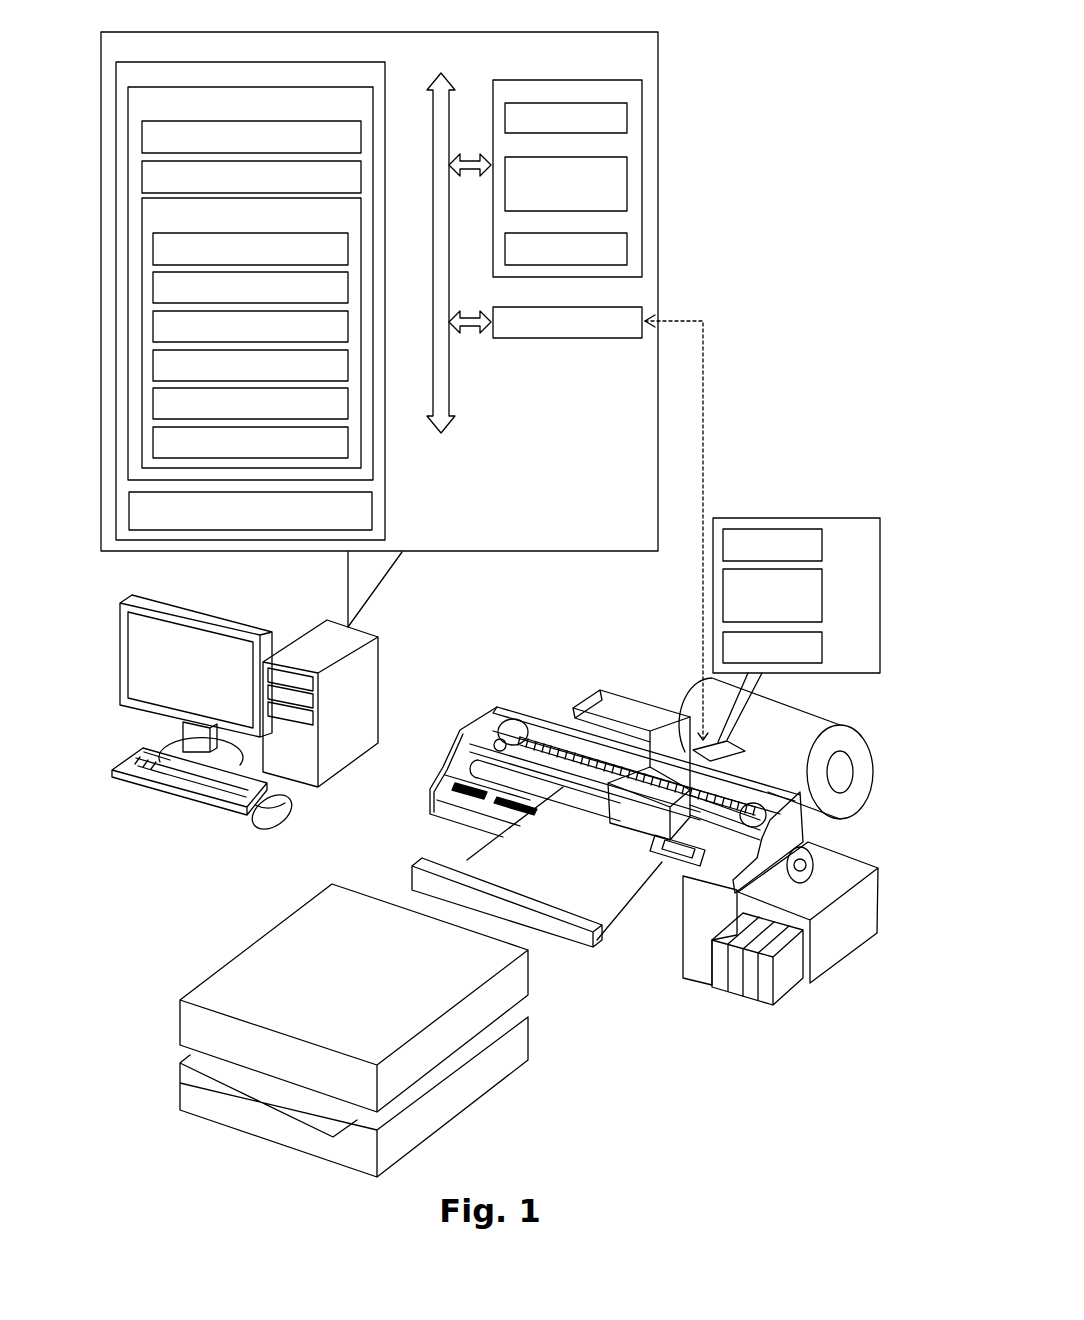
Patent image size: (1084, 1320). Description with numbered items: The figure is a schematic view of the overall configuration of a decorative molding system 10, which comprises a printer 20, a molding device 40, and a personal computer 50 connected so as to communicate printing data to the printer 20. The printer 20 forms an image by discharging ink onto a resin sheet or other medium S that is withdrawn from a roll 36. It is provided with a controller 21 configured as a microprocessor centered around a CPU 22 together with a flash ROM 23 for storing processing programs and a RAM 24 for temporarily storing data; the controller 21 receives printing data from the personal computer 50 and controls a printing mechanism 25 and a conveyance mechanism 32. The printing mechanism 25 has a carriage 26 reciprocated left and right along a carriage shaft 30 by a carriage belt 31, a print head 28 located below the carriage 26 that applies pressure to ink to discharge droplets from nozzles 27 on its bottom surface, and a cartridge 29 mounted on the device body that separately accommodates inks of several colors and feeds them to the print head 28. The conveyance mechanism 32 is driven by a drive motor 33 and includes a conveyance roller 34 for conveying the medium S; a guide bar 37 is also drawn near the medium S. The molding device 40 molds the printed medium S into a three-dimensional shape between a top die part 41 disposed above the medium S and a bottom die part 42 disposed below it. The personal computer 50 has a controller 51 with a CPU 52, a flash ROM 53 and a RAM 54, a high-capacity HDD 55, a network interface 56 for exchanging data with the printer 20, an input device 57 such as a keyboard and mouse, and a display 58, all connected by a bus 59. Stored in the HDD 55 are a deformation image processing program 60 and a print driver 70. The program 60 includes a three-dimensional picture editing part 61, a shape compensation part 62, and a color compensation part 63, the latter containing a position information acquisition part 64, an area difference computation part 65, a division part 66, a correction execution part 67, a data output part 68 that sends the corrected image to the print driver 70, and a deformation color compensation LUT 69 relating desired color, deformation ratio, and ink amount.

The decorative molding system 10 is at (614, 25).
The printer 20 is at (613, 670).
The controller 21 is at (822, 518).
The CPU 22 is at (822, 547).
The flash ROM 23 is at (822, 594).
The RAM 24 is at (822, 645).
The printing mechanism 25 is at (639, 844).
The carriage 26 is at (660, 830).
The nozzles 27 is at (687, 837).
The print head 28 is at (670, 835).
The cartridge 29 is at (752, 985).
The carriage shaft 30 is at (475, 748).
The carriage belt 31 is at (500, 730).
The conveyance mechanism 32 is at (428, 836).
The drive motor 33 is at (813, 845).
The conveyance roller 34 is at (490, 805).
The roll 36 is at (835, 727).
The guide bar 37 is at (410, 873).
The molding device 40 is at (250, 914).
The top die part 41 is at (243, 948).
The bottom die part 42 is at (193, 1060).
The personal computer 50 is at (386, 642).
The controller 51 is at (568, 78).
The CPU 52 is at (570, 101).
The flash ROM 53 is at (568, 157).
The RAM 54 is at (568, 233).
The HDD 55 is at (253, 57).
The network interface 56 is at (568, 307).
The input device 57 is at (207, 803).
The display 58 is at (232, 618).
The bus 59 is at (450, 405).
The deformation image processing program 60 is at (373, 100).
The 3D picture editing part 61 is at (362, 135).
The shape compensation part 62 is at (362, 176).
The color compensation part 63 is at (362, 198).
The position information acquisition part 64 is at (348, 247).
The area difference computation part 65 is at (348, 287).
The division part 66 is at (348, 323).
The correction execution part 67 is at (348, 362).
The data output part 68 is at (348, 400).
The deformation color compensation LUT 69 is at (348, 440).
The print driver 70 is at (368, 510).
The medium S is at (570, 952).